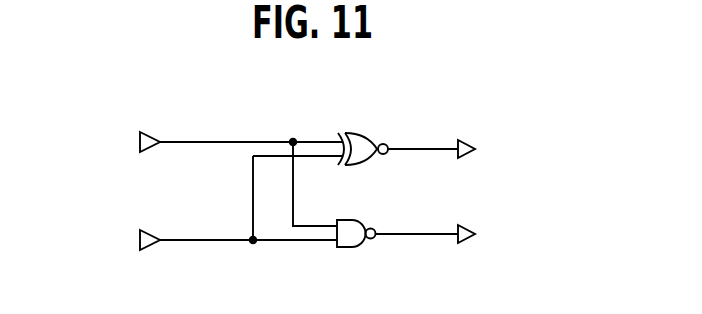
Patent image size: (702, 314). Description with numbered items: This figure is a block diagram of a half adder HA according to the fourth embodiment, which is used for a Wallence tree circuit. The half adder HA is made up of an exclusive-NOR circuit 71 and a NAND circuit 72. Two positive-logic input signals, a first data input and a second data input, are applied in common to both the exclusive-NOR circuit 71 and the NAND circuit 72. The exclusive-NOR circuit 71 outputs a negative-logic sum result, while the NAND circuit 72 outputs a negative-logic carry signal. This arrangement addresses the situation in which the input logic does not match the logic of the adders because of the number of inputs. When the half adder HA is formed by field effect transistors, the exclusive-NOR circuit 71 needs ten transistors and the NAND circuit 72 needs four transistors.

The exclusive-NOR circuit 71 is at (362, 133).
The NAND circuit 72 is at (361, 221).
The half adder HA is at (555, 194).